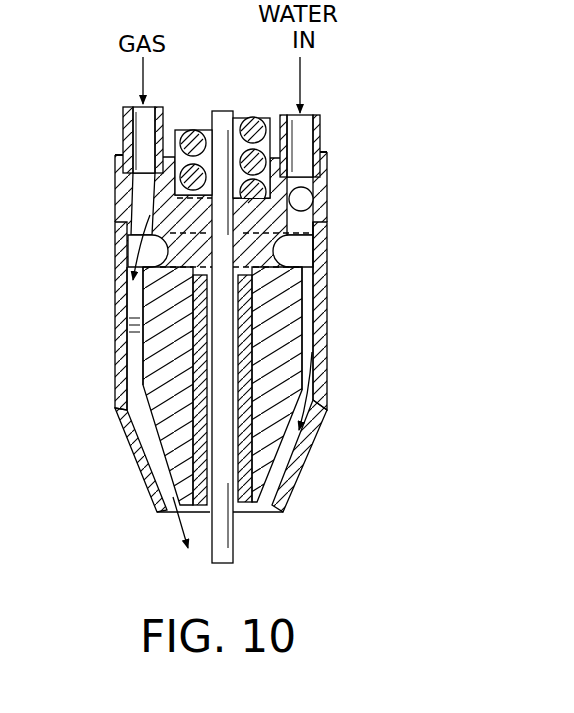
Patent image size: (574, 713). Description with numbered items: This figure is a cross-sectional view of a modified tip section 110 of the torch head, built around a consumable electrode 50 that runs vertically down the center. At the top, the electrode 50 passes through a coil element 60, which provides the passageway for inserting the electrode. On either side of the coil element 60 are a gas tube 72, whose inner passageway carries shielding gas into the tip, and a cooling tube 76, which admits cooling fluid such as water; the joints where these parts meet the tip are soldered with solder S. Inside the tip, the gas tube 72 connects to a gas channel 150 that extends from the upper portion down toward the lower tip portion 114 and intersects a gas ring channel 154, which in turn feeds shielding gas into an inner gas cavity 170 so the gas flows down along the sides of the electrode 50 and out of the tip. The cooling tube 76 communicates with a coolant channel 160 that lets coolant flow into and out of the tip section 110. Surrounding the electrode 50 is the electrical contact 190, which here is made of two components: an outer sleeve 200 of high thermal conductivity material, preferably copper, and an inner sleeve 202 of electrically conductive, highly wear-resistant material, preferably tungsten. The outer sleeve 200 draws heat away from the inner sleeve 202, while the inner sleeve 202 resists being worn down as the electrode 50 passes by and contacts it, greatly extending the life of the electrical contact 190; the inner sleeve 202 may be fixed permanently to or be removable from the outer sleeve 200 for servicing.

The electrode 50 is at (226, 110).
The coil element 60 is at (190, 131).
The gas tube 72 is at (122, 120).
The cooling tube 76 is at (320, 121).
The solder S is at (116, 152).
The tip section 110 is at (333, 240).
The lower tip portion 114 is at (328, 404).
The gas channel 150 is at (155, 193).
The gas ring channel 154 is at (302, 251).
The coolant channel 160 is at (313, 196).
The inner gas cavity 170 is at (126, 322).
The electrical contact 190 is at (302, 320).
The outer sleeve 200 is at (158, 355).
The inner sleeve 202 is at (196, 438).